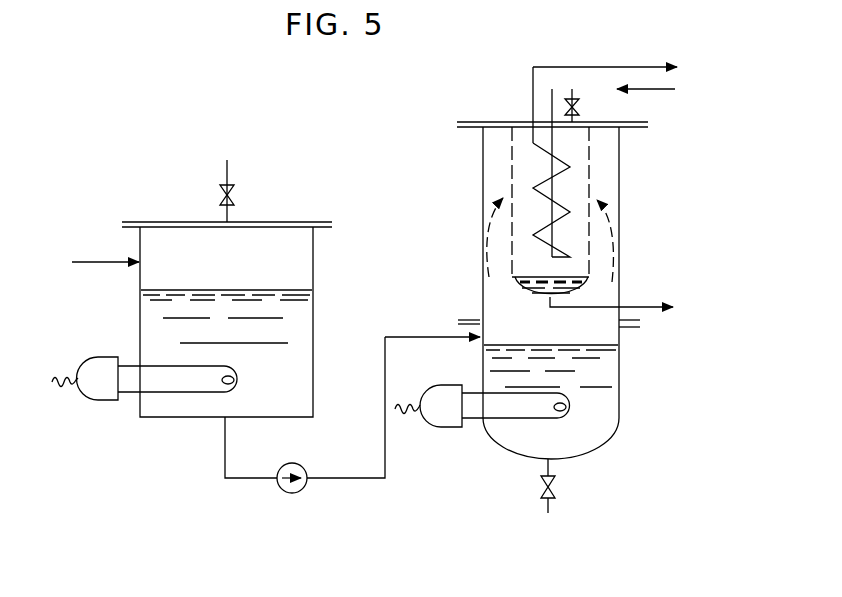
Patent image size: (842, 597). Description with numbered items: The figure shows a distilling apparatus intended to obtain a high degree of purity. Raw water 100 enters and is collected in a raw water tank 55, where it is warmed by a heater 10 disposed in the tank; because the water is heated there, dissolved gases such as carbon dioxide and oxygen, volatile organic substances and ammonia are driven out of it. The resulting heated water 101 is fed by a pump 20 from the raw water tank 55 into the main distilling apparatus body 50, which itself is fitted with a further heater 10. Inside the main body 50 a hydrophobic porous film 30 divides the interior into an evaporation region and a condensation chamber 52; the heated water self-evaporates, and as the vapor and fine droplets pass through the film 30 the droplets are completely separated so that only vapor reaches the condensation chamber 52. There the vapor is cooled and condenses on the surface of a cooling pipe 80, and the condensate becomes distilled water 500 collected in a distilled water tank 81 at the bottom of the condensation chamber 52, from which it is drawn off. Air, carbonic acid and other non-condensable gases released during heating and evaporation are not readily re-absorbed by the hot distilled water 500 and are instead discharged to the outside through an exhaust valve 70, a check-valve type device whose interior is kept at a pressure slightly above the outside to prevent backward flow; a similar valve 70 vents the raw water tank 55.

The heater 10 is at (100, 400).
The recirculation pump 20 is at (292, 493).
The hydrophobic porous film 30 is at (595, 237).
The main distilling apparatus body 50 is at (619, 385).
The condensation chamber 52 is at (583, 178).
The raw water tank 55 is at (313, 263).
The exhaust valve 70 is at (236, 195).
The cooling pipe 80 is at (548, 178).
The distilled water tank 81 is at (575, 291).
The raw water 100 is at (87, 259).
The heated water 101 is at (418, 334).
The distilled water 500 is at (666, 311).